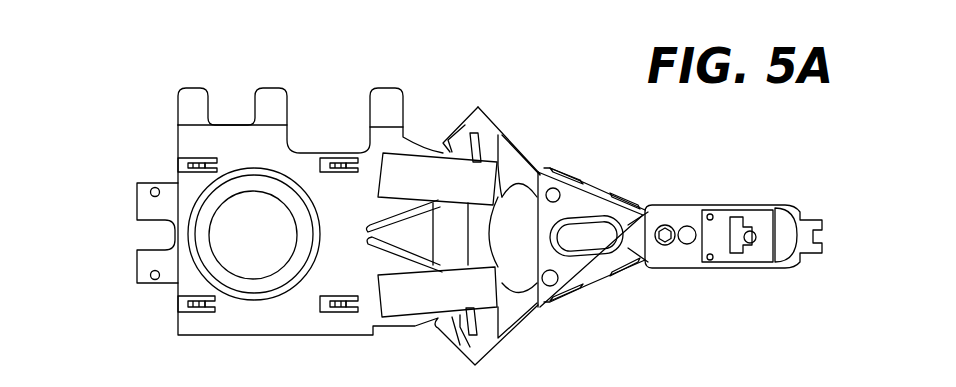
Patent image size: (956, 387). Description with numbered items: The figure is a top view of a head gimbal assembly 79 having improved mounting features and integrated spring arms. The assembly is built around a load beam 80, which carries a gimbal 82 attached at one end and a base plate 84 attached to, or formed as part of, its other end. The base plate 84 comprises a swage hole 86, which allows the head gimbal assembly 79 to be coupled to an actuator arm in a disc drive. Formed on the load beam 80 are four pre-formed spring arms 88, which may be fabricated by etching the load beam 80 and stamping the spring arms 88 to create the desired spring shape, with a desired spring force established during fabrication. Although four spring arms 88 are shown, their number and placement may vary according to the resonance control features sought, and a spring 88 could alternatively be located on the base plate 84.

The head gimbal assembly 79 is at (626, 156).
The load beam 80 is at (630, 225).
The gimbal 82 is at (808, 206).
The base plate 84 is at (175, 317).
The swage hole 86 is at (222, 209).
The spring arms 88 is at (177, 165).